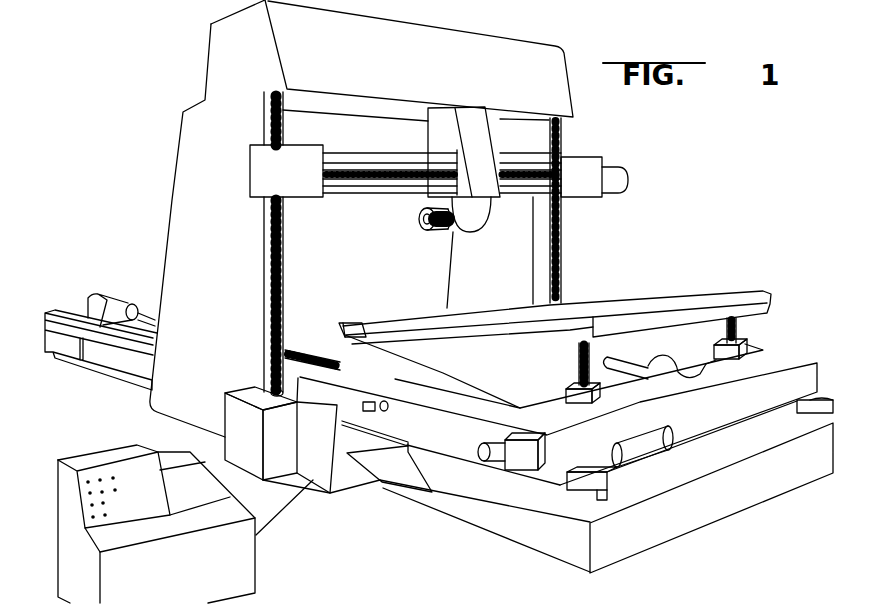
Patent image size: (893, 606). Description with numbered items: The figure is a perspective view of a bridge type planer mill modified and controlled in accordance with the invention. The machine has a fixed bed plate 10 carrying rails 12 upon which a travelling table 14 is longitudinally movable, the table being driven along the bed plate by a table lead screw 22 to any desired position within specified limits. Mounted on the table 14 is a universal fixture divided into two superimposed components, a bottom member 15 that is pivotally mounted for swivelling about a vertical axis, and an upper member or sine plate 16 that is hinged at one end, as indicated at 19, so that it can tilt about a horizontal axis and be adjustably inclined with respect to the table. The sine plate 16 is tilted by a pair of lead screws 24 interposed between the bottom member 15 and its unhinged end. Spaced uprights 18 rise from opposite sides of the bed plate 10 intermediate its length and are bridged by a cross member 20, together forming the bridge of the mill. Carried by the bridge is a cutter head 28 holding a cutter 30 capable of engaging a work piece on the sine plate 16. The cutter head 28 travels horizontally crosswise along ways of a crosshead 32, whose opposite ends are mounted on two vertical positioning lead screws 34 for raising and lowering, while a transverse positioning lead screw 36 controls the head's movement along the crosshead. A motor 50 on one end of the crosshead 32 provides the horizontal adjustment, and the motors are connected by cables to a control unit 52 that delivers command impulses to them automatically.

The bed plate 10 is at (575, 542).
The rails 12 is at (612, 473).
The travelling table 14 is at (797, 363).
The bottom member 15 is at (503, 375).
The sine plate 16 is at (767, 293).
The uprights 18 is at (180, 262).
The hinge 19 is at (367, 327).
The cross member 20 is at (528, 57).
The table lead screw 22 is at (310, 347).
The lead screws 24 is at (740, 333).
The cutter head 28 is at (478, 122).
The cutter 30 is at (428, 232).
The crosshead 32 is at (372, 158).
The vertical positioning lead screws 34 is at (284, 256).
The transverse positioning lead screw 36 is at (525, 181).
The motor 50 is at (620, 182).
The control unit 52 is at (193, 578).